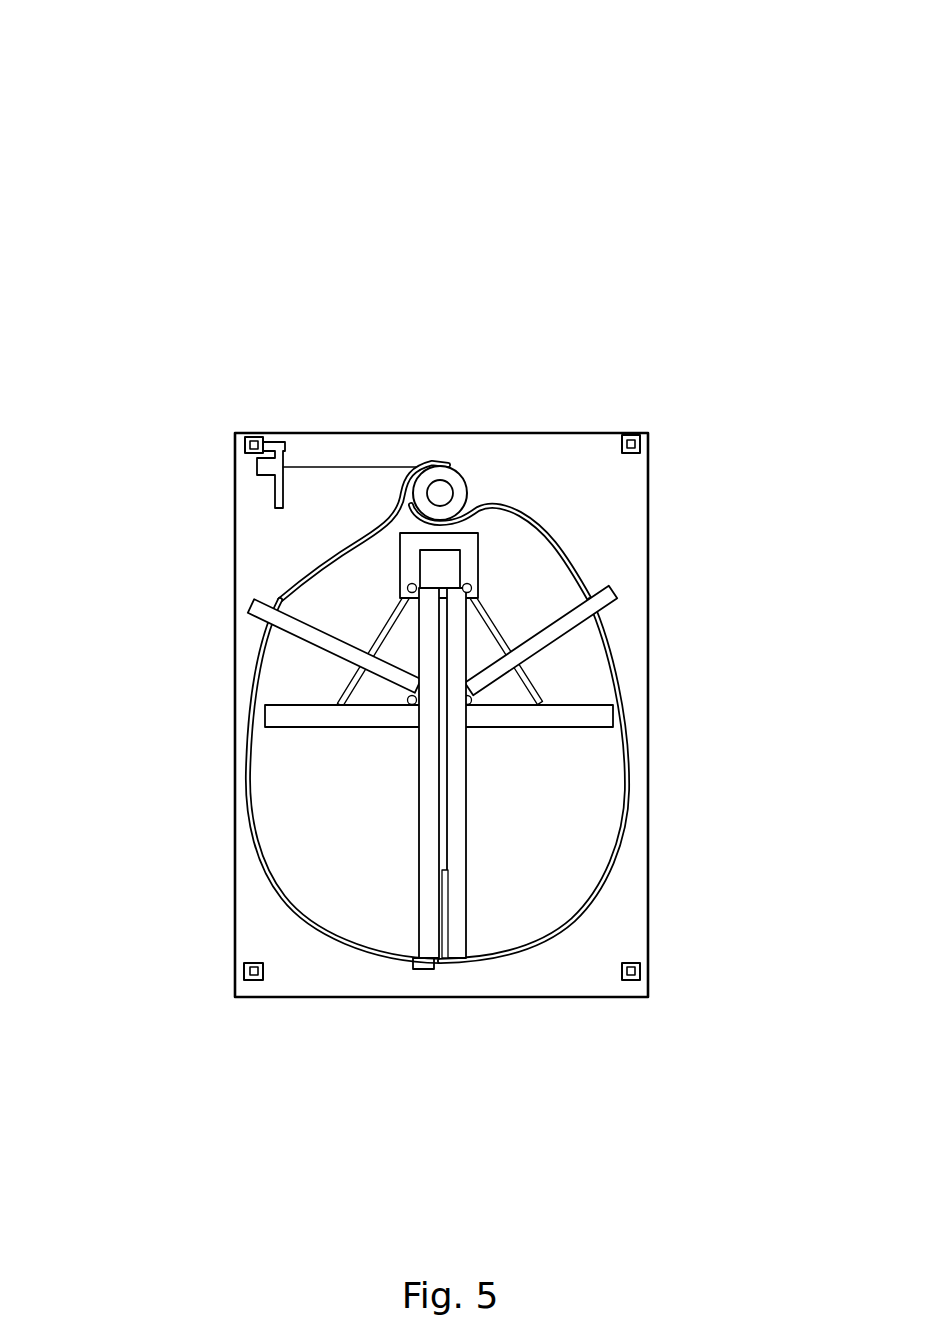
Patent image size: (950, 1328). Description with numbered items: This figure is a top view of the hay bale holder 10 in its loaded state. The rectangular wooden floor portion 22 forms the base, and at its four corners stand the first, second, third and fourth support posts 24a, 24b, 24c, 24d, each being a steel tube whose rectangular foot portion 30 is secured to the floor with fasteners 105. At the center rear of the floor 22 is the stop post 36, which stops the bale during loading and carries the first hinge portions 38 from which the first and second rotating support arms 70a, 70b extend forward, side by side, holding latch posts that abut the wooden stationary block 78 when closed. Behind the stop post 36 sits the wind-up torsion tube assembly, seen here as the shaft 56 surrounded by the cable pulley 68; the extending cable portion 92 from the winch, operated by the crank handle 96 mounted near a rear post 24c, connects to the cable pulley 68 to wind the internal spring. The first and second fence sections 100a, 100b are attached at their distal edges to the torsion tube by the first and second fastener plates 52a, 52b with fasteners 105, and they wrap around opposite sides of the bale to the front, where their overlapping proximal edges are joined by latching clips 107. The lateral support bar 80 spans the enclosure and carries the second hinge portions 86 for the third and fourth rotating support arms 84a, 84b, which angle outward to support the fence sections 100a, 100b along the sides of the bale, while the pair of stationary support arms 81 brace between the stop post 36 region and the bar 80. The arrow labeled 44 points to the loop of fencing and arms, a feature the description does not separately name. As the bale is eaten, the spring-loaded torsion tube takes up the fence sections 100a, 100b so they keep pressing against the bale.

The hay bale holder 10 is at (70, 166).
The wooden floor portion 22 is at (630, 500).
The first support post 24a is at (247, 982).
The second support post 24b is at (641, 982).
The third support post 24c is at (245, 437).
The fourth support post 24d is at (626, 437).
The rectangular foot portion 30 is at (245, 443).
The stop post 36 is at (403, 535).
The first hinge portions 38 is at (410, 586).
The folding mechanism 44 is at (612, 643).
The first fastener plate 52a is at (470, 510).
The second fastener plate 52b is at (417, 466).
The shaft 56 is at (440, 497).
The cable pulley 68 is at (447, 466).
The first rotating support arm 70a is at (430, 885).
The second rotating support arm 70b is at (455, 885).
The wooden stationary block 78 is at (445, 907).
The lateral support bar 80 is at (285, 720).
The stationary support arms 81 is at (388, 627).
The third rotating support arm 84a is at (595, 603).
The fourth rotating support arm 84b is at (278, 600).
The second hinge portions 86 is at (408, 708).
The extending cable portion 92 is at (325, 467).
The crank handle 96 is at (275, 495).
The first fence section 100a is at (255, 847).
The second fence section 100b is at (625, 833).
The fasteners 105 is at (435, 452).
The latching clips 107 is at (428, 967).